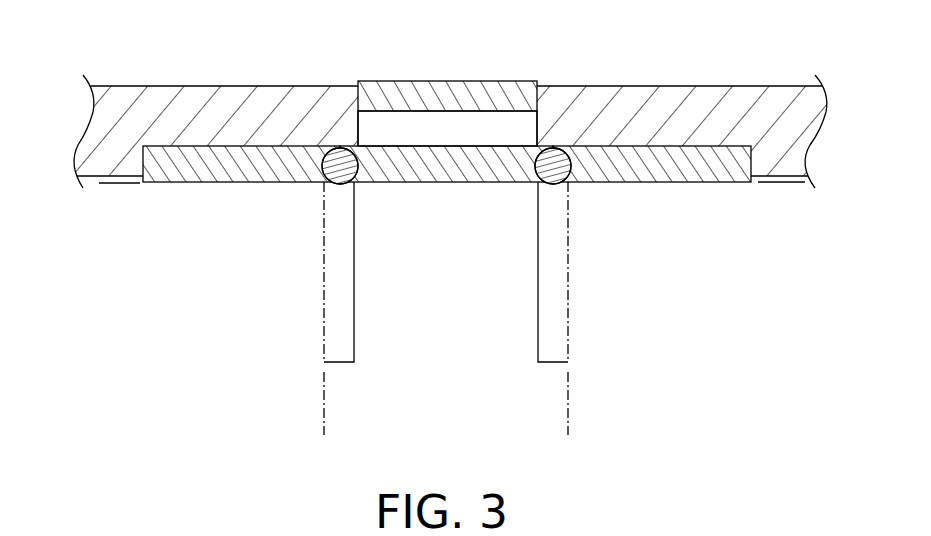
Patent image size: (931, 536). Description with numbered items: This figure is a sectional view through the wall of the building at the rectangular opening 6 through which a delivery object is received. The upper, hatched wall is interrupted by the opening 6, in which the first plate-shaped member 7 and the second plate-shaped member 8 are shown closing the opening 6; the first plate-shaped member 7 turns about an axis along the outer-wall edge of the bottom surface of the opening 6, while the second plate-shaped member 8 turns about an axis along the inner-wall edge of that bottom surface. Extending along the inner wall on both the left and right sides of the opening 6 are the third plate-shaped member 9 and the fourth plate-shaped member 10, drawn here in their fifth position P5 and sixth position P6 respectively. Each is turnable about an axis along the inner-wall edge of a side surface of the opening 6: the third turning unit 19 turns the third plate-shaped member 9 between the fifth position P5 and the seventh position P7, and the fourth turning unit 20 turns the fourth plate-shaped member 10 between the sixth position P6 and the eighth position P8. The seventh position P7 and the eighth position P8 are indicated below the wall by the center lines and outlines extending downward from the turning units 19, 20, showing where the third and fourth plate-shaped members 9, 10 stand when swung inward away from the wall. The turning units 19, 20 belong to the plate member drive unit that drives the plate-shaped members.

The opening 6 is at (467, 125).
The first plate-shaped member 7 is at (420, 81).
The second plate-shaped member 8 is at (442, 183).
The third plate-shaped member 9 is at (240, 183).
The fourth plate-shaped member 10 is at (673, 183).
The third turning unit 19 is at (338, 188).
The fourth turning unit 20 is at (552, 188).
The fifth position P5 is at (117, 198).
The sixth position P6 is at (782, 197).
The seventh position P7 is at (320, 321).
The eighth position P8 is at (569, 321).